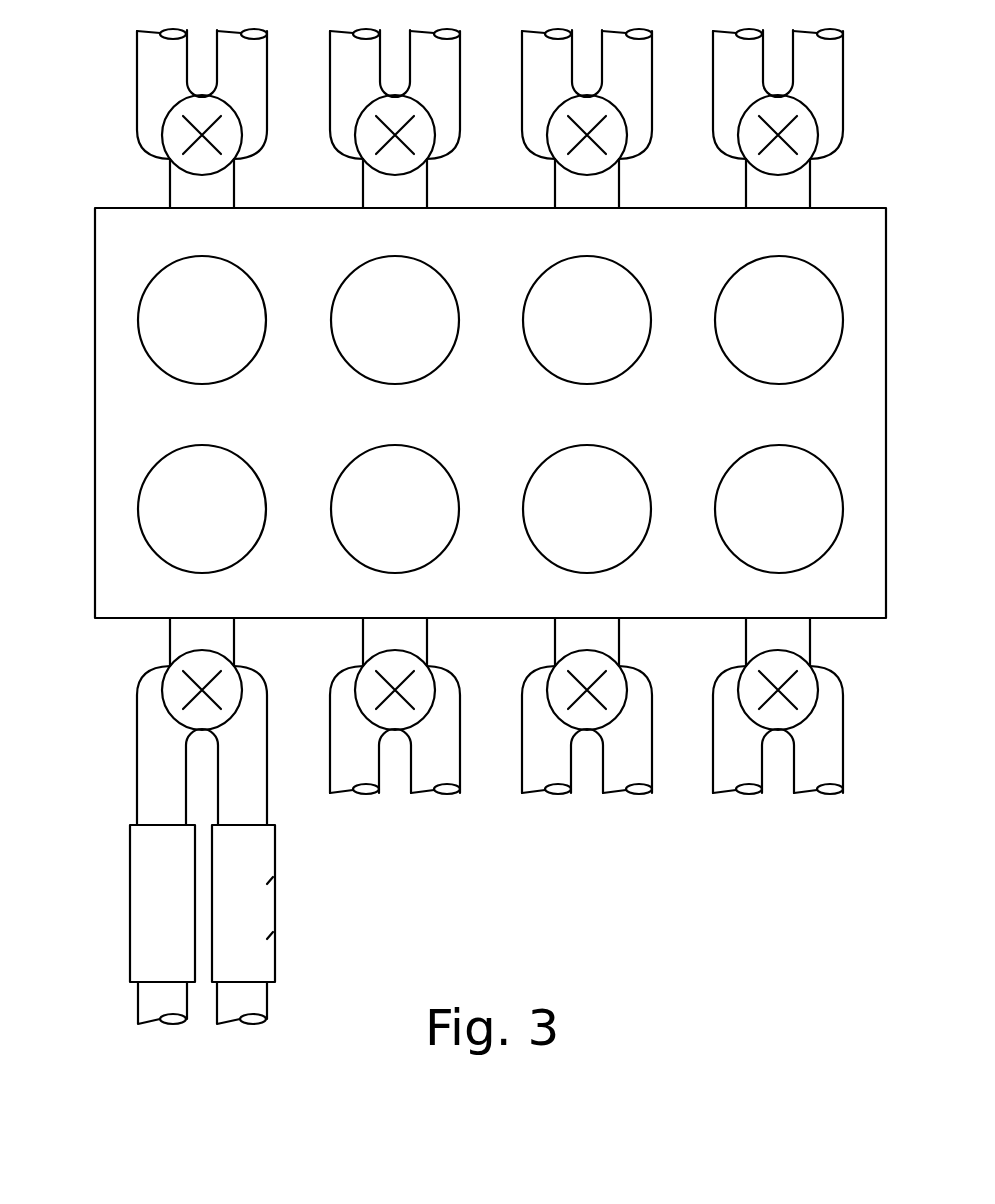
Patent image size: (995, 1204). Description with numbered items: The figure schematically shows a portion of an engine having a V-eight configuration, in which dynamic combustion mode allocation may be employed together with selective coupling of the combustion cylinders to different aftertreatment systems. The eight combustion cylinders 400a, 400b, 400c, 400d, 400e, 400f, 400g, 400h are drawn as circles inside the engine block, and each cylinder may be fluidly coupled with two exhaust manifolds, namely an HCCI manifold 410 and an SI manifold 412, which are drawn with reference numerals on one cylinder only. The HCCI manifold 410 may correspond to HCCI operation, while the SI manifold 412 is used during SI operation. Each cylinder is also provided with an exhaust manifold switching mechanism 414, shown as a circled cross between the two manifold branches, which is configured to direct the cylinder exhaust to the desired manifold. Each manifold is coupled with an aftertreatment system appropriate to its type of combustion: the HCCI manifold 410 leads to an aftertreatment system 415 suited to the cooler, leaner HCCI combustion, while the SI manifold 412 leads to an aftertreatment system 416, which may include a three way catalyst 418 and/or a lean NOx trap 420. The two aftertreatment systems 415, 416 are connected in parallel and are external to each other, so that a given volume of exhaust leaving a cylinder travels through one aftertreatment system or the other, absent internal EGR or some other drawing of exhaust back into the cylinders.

The combustion cylinder 400a is at (202, 320).
The combustion cylinder 400b is at (395, 320).
The combustion cylinder 400c is at (587, 320).
The combustion cylinder 400d is at (779, 320).
The combustion cylinder 400e is at (202, 509).
The combustion cylinder 400f is at (395, 509).
The combustion cylinder 400g is at (587, 509).
The combustion cylinder 400h is at (779, 509).
The exhaust manifold switching mechanism 414 is at (172, 681).
The HCCI exhaust manifold 410 is at (155, 734).
The SI exhaust manifold 412 is at (247, 733).
The aftertreatment system 415 is at (140, 857).
The aftertreatment system 416 is at (284, 842).
The three way catalyst 418 is at (273, 877).
The lean NOx trap 420 is at (273, 932).